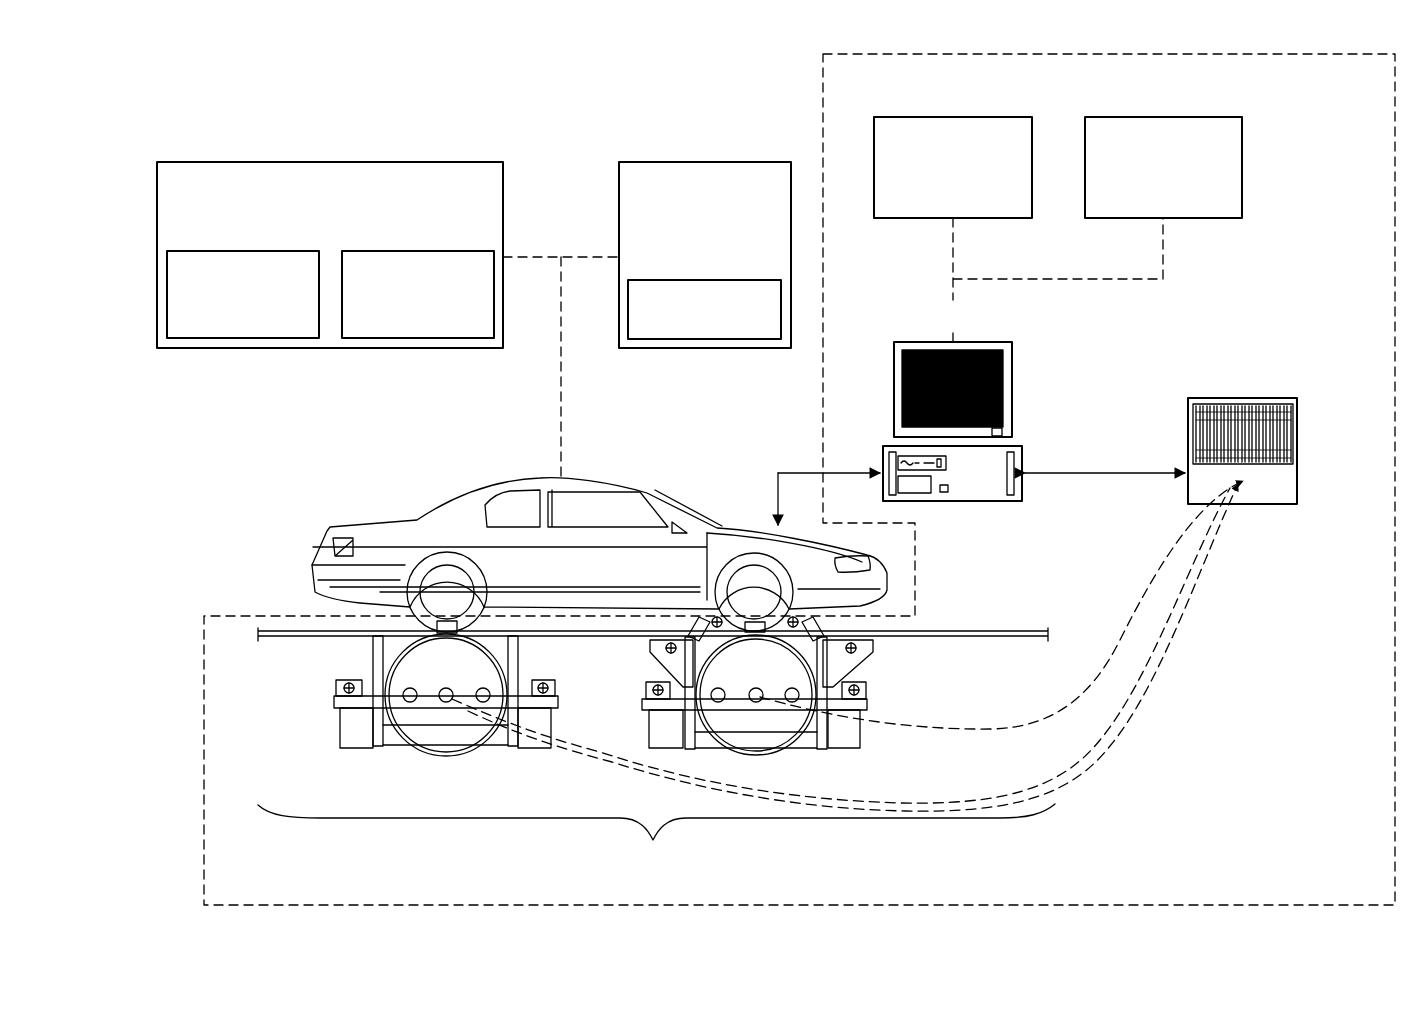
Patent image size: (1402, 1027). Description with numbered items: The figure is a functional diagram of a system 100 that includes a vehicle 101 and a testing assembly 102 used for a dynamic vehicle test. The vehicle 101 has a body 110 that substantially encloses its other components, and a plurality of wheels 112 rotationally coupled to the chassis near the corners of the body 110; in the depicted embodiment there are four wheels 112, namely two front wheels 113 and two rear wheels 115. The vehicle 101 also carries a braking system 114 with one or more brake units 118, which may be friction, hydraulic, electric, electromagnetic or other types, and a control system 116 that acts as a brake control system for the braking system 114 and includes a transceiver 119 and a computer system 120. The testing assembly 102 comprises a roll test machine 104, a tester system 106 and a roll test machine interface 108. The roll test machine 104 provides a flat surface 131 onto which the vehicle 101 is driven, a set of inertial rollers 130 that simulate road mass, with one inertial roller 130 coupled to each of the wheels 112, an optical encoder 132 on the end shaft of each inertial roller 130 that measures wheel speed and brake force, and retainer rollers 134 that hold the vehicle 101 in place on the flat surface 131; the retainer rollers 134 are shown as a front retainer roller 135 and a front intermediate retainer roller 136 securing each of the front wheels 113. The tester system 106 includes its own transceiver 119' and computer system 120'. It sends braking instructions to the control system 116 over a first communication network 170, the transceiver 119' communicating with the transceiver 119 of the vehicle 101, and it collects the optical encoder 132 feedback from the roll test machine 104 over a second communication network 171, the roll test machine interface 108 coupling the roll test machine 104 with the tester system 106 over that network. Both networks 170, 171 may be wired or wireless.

The system 100 is at (166, 76).
The vehicle 101 is at (577, 537).
The testing assembly 102 is at (1147, 829).
The roll test machine 104 is at (750, 694).
The tester system 106 is at (1012, 358).
The roll test machine interface 108 is at (1297, 410).
The body 110 is at (373, 533).
The wheels 112 is at (584, 537).
The front wheels 113 is at (755, 565).
The braking system 114 is at (682, 161).
The rear wheels 115 is at (460, 565).
The control system 116 is at (222, 161).
The brake units 118 is at (706, 280).
The transceiver 119 is at (243, 277).
The computer system 120 is at (418, 277).
The transceiver 119' is at (1162, 148).
The computer system 120' is at (952, 148).
The inertial rollers 130 is at (425, 746).
The flat surface 131 is at (1032, 630).
The optical encoder 132 is at (433, 624).
The retainer rollers 134 is at (776, 632).
The front retainer roller 135 is at (866, 622).
The front intermediate retainer roller 136 is at (662, 630).
The first communication network 170 is at (818, 464).
The second communication network 171 is at (1105, 473).